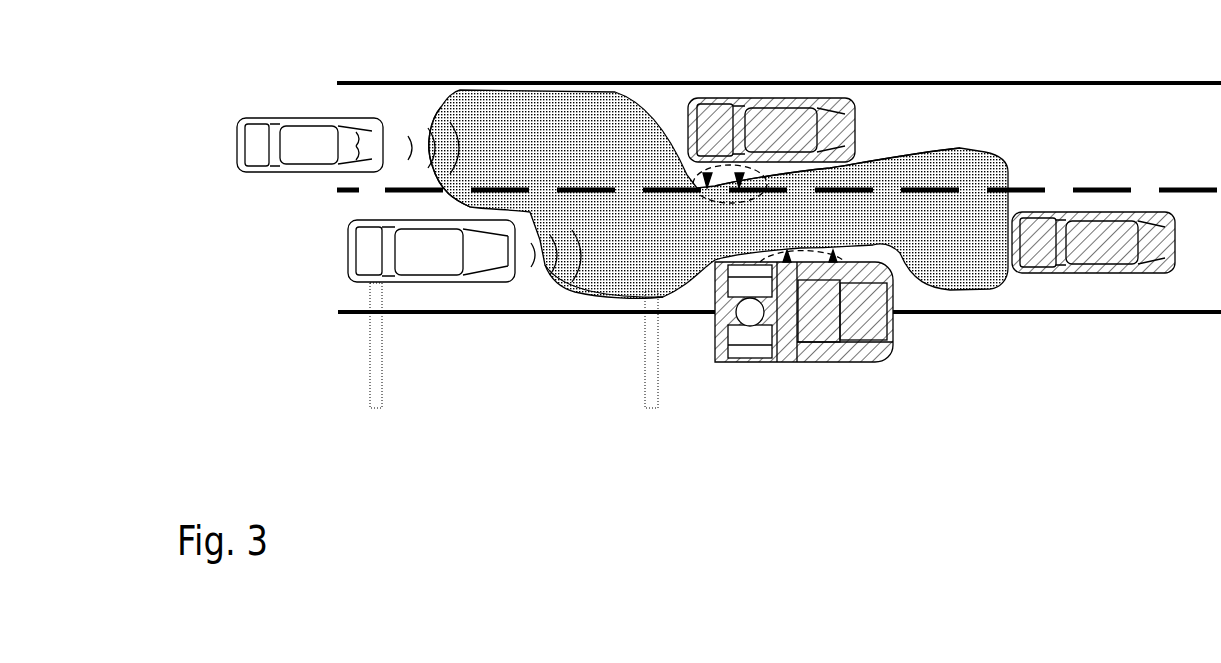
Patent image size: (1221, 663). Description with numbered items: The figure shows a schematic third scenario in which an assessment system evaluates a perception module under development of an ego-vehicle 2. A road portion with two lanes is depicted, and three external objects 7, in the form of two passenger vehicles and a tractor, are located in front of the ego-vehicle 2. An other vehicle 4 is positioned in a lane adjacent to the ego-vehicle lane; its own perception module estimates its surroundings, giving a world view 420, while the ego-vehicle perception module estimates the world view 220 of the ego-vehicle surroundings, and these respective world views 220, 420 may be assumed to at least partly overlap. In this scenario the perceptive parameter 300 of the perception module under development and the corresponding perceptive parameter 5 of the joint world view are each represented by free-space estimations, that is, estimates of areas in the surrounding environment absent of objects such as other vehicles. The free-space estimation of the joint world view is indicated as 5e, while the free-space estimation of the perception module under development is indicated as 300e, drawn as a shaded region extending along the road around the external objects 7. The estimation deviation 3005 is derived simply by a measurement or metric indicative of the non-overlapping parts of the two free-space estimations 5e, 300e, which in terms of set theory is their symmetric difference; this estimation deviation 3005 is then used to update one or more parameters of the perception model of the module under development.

The ego-vehicle 2 is at (460, 283).
The other vehicle 4 is at (238, 130).
The external objects 7 is at (817, 98).
The corresponding perceptive parameter 5 is at (837, 143).
The free-space estimation of the joint world view 5e is at (888, 157).
The world view 220 is at (596, 266).
The perceptive parameter 300 is at (776, 194).
The free-space estimation of the PMUD 300e is at (992, 150).
The world view of the other vehicle 420 is at (487, 116).
The estimation deviation 3005 is at (695, 182).